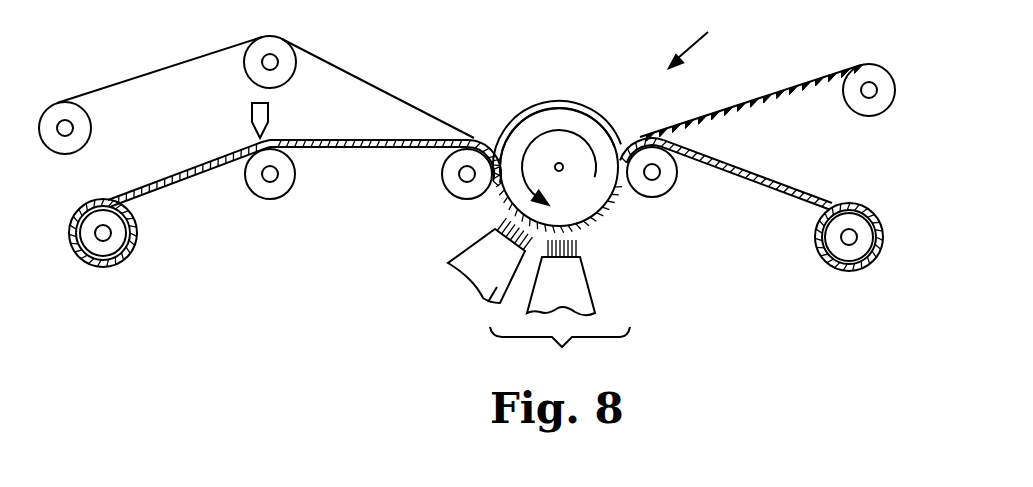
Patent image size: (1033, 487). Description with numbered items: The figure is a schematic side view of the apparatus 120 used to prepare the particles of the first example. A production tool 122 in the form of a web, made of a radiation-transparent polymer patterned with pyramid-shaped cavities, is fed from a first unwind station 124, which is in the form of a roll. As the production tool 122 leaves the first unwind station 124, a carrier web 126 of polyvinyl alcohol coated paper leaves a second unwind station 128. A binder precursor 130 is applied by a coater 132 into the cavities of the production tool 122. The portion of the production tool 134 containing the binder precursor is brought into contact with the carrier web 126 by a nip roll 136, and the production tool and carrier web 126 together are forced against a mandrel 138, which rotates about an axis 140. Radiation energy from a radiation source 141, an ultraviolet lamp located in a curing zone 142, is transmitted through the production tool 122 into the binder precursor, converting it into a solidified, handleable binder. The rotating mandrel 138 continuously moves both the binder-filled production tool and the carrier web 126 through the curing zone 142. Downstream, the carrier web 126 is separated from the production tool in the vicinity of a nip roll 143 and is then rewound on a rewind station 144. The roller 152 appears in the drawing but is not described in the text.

The apparatus 120 is at (712, 37).
The production tool 122 is at (205, 170).
The first unwind station 124 is at (117, 243).
The carrier web 126 is at (155, 68).
The second unwind station 128 is at (60, 118).
The binder precursor 130 is at (266, 139).
The coater 132 is at (253, 116).
The portion of the production tool containing the binder precursor 134 is at (372, 148).
The nip roll 136 is at (467, 157).
The mandrel 138 is at (517, 202).
The axis 140 is at (550, 130).
The radiation source 141 is at (550, 305).
The curing zone 142 is at (532, 297).
The nip roll 143 is at (662, 183).
The rewind station 144 is at (869, 64).
The roller 152 is at (857, 252).